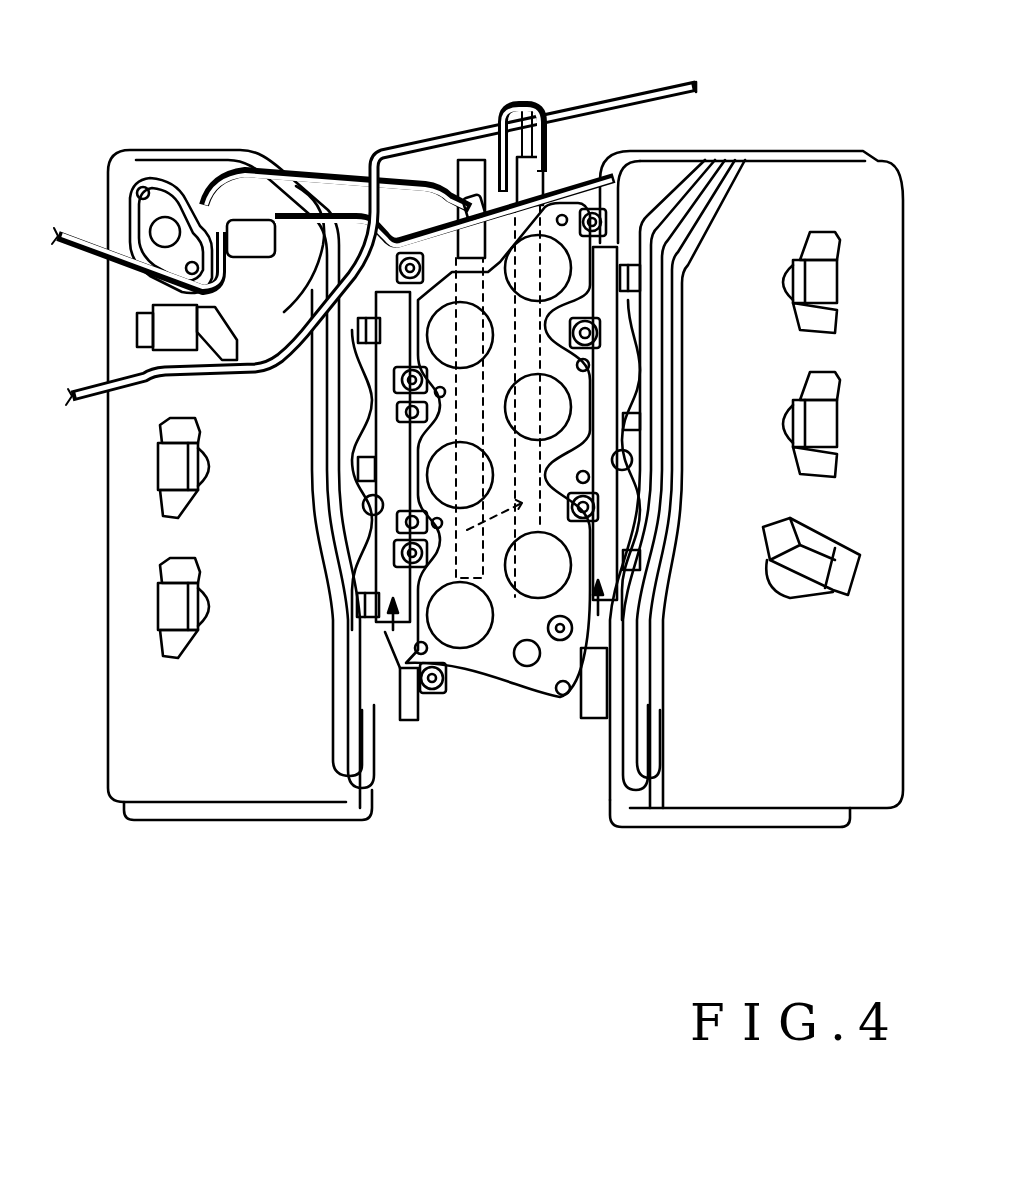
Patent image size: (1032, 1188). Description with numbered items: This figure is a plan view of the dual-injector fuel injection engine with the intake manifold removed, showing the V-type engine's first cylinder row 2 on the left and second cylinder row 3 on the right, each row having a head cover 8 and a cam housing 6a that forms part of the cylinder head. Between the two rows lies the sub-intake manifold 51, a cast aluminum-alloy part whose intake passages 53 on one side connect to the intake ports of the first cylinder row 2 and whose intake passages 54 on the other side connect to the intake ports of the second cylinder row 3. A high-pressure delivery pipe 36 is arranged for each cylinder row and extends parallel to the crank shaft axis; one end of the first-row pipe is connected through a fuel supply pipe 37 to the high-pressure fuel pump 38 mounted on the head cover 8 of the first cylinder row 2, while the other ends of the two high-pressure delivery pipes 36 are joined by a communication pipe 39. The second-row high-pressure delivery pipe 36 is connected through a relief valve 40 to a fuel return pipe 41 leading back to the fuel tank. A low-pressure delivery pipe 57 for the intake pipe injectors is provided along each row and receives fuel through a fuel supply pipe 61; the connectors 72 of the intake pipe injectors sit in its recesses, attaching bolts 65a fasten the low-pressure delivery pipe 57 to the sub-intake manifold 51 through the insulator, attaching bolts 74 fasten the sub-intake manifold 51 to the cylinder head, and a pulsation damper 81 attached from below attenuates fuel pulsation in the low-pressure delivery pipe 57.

The first cylinder row 2 is at (173, 828).
The second cylinder row 3 is at (809, 850).
The head cover 8 is at (225, 772).
The cam housing 6a is at (392, 668).
The high-pressure delivery pipe 36 is at (470, 158).
The fuel supply pipe 37 is at (297, 168).
The high-pressure fuel pump 38 is at (148, 175).
The communication pipe 39 is at (492, 582).
The relief valve 40 is at (495, 178).
The fuel return pipe 41 is at (430, 139).
The sub-intake manifold 51 is at (513, 672).
The intake passages 53 is at (473, 351).
The intake passages 54 is at (551, 284).
The low-pressure delivery pipe 57 is at (370, 700).
The fuel supply pipe 61 is at (647, 88).
The attaching bolt 65a is at (400, 382).
The connectors 72 is at (358, 330).
The attaching bolt 74 is at (410, 258).
The pulsation damper 81 is at (363, 507).